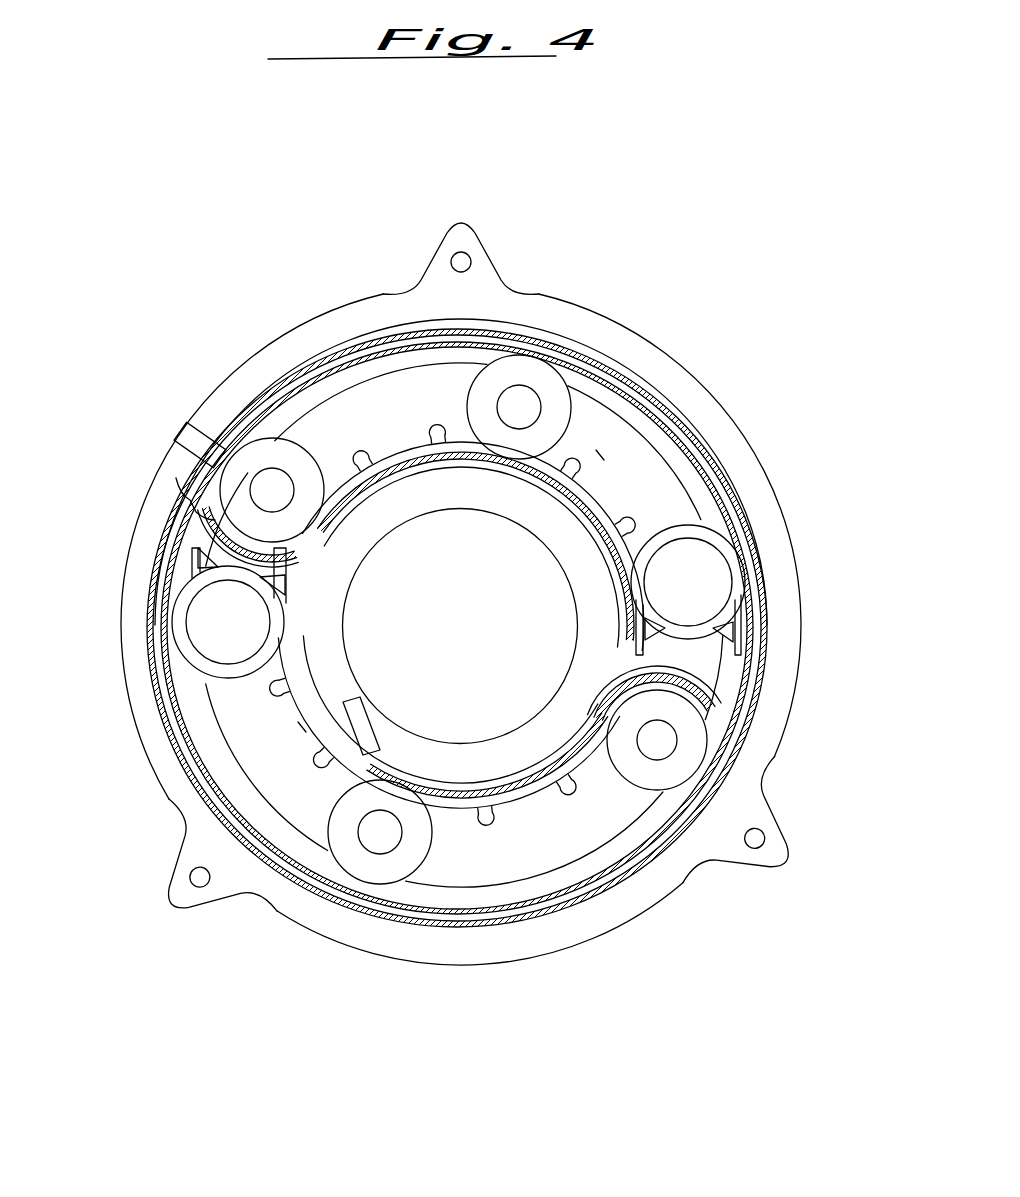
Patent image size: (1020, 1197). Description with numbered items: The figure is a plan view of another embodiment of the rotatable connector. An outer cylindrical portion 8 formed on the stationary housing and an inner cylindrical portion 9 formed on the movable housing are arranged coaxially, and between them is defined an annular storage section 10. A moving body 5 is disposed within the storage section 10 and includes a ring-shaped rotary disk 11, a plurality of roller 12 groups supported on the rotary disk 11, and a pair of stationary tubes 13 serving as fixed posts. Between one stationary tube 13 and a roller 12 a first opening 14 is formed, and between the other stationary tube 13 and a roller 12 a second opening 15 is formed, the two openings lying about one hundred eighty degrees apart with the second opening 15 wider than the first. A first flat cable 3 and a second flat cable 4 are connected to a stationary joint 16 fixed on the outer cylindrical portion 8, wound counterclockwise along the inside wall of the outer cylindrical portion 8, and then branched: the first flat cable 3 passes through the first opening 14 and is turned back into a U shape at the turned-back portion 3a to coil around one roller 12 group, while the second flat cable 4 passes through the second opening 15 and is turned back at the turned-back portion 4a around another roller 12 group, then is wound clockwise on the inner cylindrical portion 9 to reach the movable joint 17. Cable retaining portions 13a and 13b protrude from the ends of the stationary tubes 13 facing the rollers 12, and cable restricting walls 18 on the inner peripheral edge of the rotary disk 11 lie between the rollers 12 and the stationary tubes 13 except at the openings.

The first flat cable 3 is at (558, 452).
The turned-back portion 3a is at (237, 580).
The second flat cable 4 is at (545, 790).
The turned-back portion 4a is at (697, 684).
The moving body 5 is at (333, 414).
The outer cylindrical portion 8 is at (148, 733).
The inner cylindrical portion 9 is at (462, 495).
The storage section 10 is at (622, 848).
The rotary disk 11 is at (683, 520).
The roller 12 is at (258, 452).
The stationary tube 13 is at (170, 645).
The cable retaining portion 13a is at (205, 545).
The cable retaining portion 13b is at (752, 640).
The first opening 14 is at (213, 520).
The second opening 15 is at (690, 695).
The stationary joint 16 is at (188, 440).
The movable joint 17 is at (357, 715).
The cable restricting wall 18 is at (598, 455).